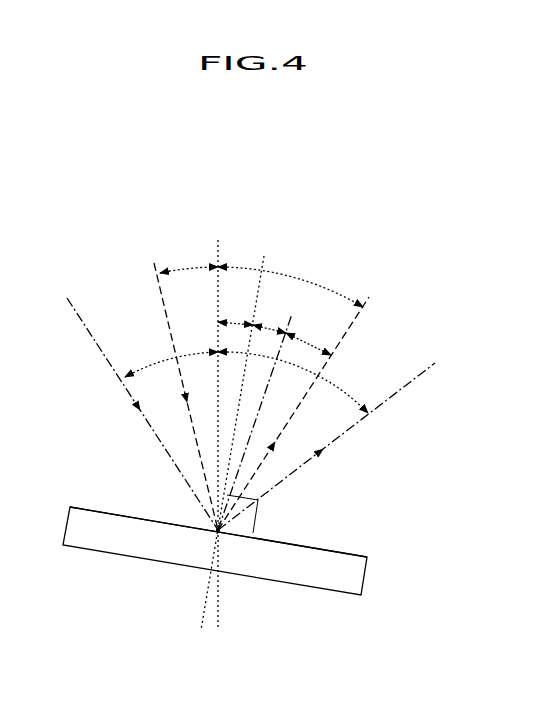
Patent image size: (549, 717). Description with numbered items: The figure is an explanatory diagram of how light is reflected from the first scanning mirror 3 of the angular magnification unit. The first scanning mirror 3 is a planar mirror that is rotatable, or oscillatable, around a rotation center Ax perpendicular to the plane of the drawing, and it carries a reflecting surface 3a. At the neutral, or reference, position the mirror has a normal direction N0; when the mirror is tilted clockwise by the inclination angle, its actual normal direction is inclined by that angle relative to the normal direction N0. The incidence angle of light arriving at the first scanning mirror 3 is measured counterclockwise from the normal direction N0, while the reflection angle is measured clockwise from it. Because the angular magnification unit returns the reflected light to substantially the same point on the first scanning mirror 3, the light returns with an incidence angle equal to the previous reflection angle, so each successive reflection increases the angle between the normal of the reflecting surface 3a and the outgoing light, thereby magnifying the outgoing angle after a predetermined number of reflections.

The first scanning mirror 3 is at (369, 577).
The reflecting surface 3a is at (335, 552).
The rotation center Ax is at (218, 530).
The normal direction at neutral position N0 is at (218, 250).